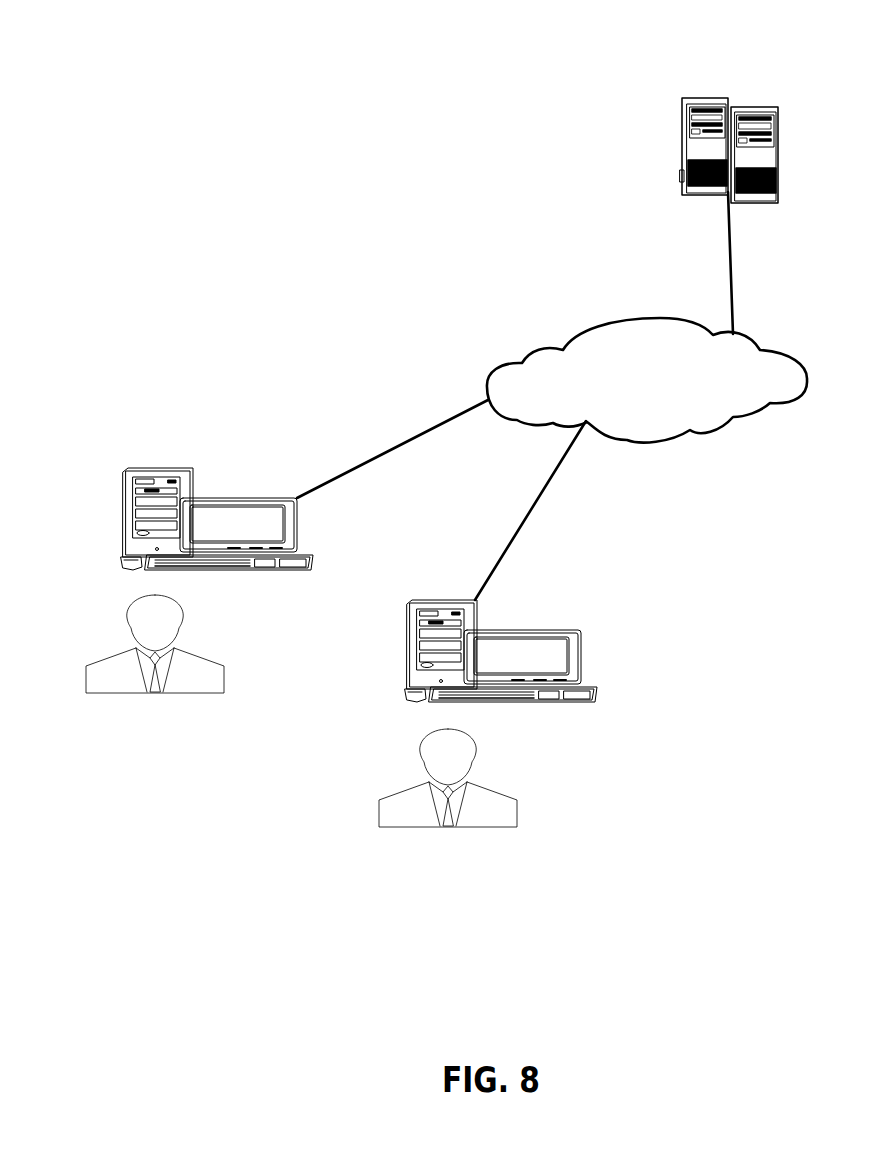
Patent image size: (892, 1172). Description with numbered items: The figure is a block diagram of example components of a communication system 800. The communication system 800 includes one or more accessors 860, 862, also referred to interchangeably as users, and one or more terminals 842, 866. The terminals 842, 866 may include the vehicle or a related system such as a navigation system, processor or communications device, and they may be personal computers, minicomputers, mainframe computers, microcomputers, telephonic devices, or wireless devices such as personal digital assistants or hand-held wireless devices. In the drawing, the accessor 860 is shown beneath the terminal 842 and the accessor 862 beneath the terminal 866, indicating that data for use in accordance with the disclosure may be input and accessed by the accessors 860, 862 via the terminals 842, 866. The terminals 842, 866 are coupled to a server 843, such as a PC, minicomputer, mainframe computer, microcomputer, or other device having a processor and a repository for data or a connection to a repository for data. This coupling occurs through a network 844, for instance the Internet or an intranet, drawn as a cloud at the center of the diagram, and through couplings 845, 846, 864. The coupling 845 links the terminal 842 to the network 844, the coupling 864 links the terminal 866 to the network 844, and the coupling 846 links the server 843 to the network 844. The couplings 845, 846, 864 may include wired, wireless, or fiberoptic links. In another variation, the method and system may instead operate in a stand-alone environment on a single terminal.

The communication system 800 is at (178, 63).
The server 843 is at (718, 96).
The coupling 846 is at (733, 270).
The network 844 is at (583, 332).
The coupling 845 is at (340, 478).
The coupling 864 is at (552, 493).
The terminal 842 is at (158, 468).
The terminal 866 is at (576, 632).
The accessor 860 is at (117, 650).
The accessor 862 is at (496, 792).